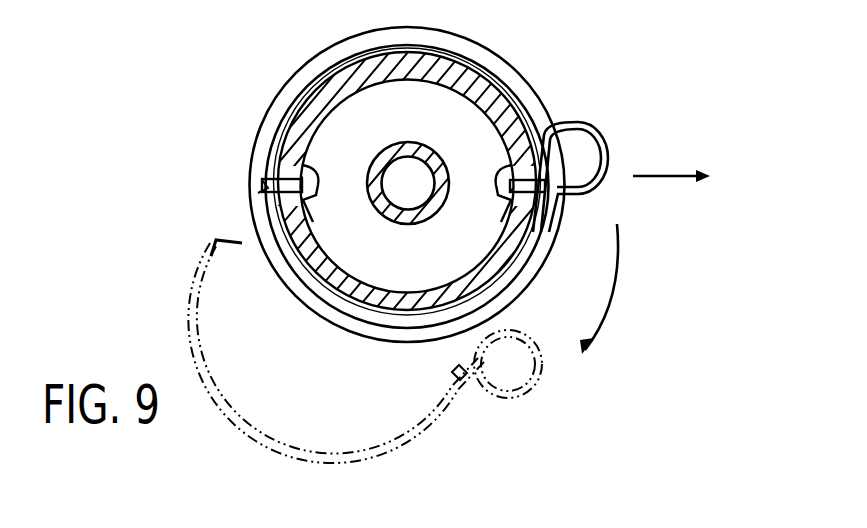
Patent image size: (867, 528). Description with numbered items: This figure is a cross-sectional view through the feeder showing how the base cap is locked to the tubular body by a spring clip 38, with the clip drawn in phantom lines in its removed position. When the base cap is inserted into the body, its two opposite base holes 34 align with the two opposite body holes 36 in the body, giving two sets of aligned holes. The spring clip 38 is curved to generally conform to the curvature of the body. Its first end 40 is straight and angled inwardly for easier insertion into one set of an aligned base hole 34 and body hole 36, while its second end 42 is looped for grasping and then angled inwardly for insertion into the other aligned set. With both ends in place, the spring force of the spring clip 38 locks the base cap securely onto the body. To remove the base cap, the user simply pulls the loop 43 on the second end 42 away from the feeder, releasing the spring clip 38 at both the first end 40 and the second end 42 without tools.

The base hole 34 is at (292, 172).
The body hole 36 is at (268, 183).
The spring clip 38 is at (348, 327).
The first end 40 is at (258, 193).
The second end 42 is at (500, 195).
The loop 43 is at (618, 157).